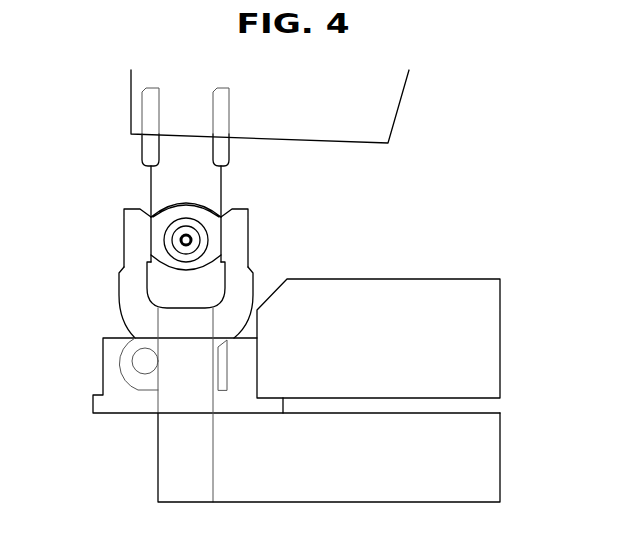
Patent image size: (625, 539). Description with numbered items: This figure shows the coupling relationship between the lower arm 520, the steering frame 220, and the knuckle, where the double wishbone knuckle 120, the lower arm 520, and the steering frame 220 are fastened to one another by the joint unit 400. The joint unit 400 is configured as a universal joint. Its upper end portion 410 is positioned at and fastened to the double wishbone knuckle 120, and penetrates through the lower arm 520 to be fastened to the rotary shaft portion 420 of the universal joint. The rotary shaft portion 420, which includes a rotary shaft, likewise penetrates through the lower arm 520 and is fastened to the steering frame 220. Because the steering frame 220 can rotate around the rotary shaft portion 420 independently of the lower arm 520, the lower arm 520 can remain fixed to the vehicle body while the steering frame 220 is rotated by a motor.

The upper member 120 is at (321, 133).
The base block 220 is at (480, 462).
The hinge assembly 400 is at (98, 290).
The hinge pins 410 is at (149, 188).
The shaft 420 is at (180, 463).
The driving unit 520 is at (483, 343).